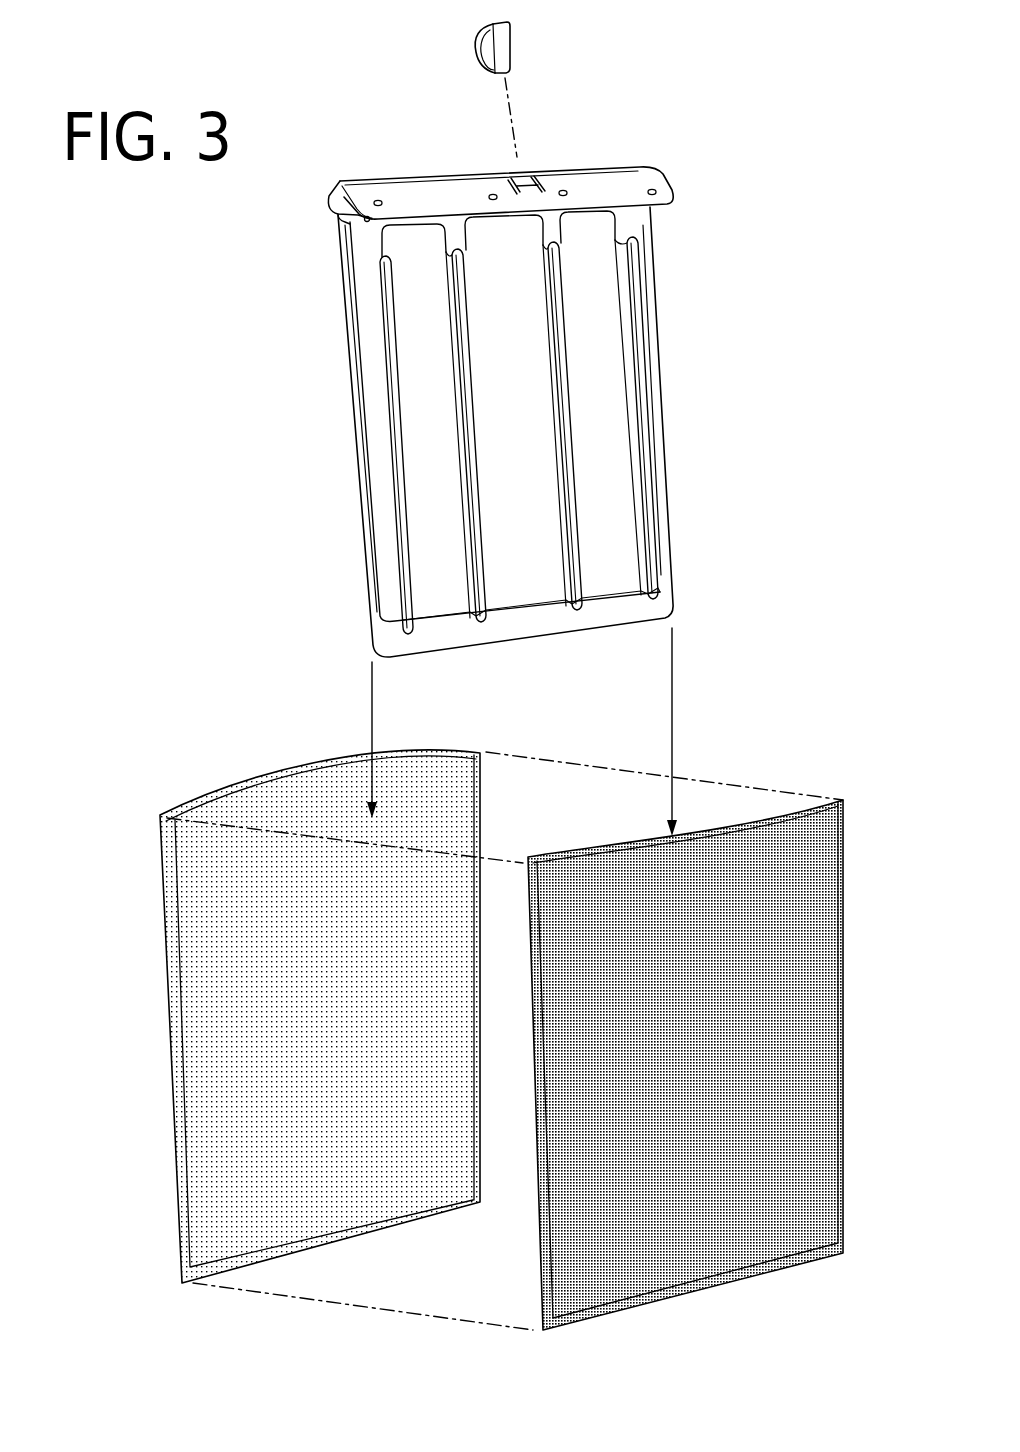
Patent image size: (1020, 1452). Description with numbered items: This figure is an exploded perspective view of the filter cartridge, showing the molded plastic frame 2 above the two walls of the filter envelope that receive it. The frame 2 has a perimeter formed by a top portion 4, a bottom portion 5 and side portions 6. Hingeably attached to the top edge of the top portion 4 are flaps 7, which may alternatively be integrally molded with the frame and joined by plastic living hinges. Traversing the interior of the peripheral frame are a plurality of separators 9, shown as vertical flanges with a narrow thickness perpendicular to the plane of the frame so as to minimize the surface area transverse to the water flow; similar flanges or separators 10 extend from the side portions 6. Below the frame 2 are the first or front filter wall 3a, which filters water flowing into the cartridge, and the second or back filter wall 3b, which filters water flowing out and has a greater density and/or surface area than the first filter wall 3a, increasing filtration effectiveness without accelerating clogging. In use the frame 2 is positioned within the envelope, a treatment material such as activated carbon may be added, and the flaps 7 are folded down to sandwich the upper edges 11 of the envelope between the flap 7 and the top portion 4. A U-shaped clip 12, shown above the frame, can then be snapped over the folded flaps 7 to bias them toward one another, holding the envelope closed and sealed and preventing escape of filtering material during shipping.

The frame 2 is at (688, 413).
The first filter wall 3a is at (200, 1090).
The second filter wall 3b is at (705, 1245).
The top portion 4 is at (360, 213).
The bottom portion 5 is at (548, 614).
The side portions 6 is at (650, 247).
The flaps 7 is at (393, 193).
The separators 9 is at (466, 306).
The flanges 10 is at (652, 495).
The upper edges 11 is at (292, 766).
The clip 12 is at (500, 42).